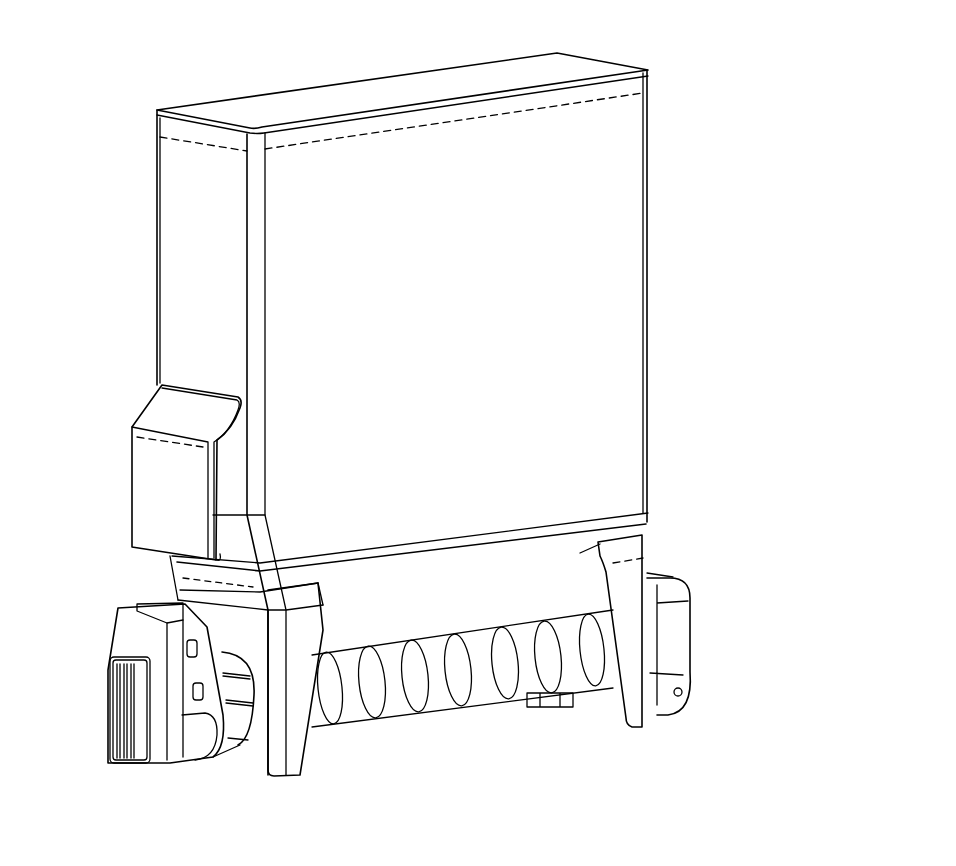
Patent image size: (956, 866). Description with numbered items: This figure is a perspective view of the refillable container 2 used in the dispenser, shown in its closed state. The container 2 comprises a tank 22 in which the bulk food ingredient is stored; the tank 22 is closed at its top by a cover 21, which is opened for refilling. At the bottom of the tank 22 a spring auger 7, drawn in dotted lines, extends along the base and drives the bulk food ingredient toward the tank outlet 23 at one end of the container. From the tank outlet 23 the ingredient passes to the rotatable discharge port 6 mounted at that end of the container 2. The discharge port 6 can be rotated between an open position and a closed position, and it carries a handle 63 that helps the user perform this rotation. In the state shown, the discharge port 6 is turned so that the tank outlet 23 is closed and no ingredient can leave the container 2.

The refillable container 2 is at (124, 153).
The cover 21 is at (338, 102).
The tank 22 is at (625, 270).
The rotatable discharge port 6 is at (123, 640).
The handle 63 is at (118, 737).
The tank outlet 23 is at (230, 730).
The spring auger 7 is at (383, 707).